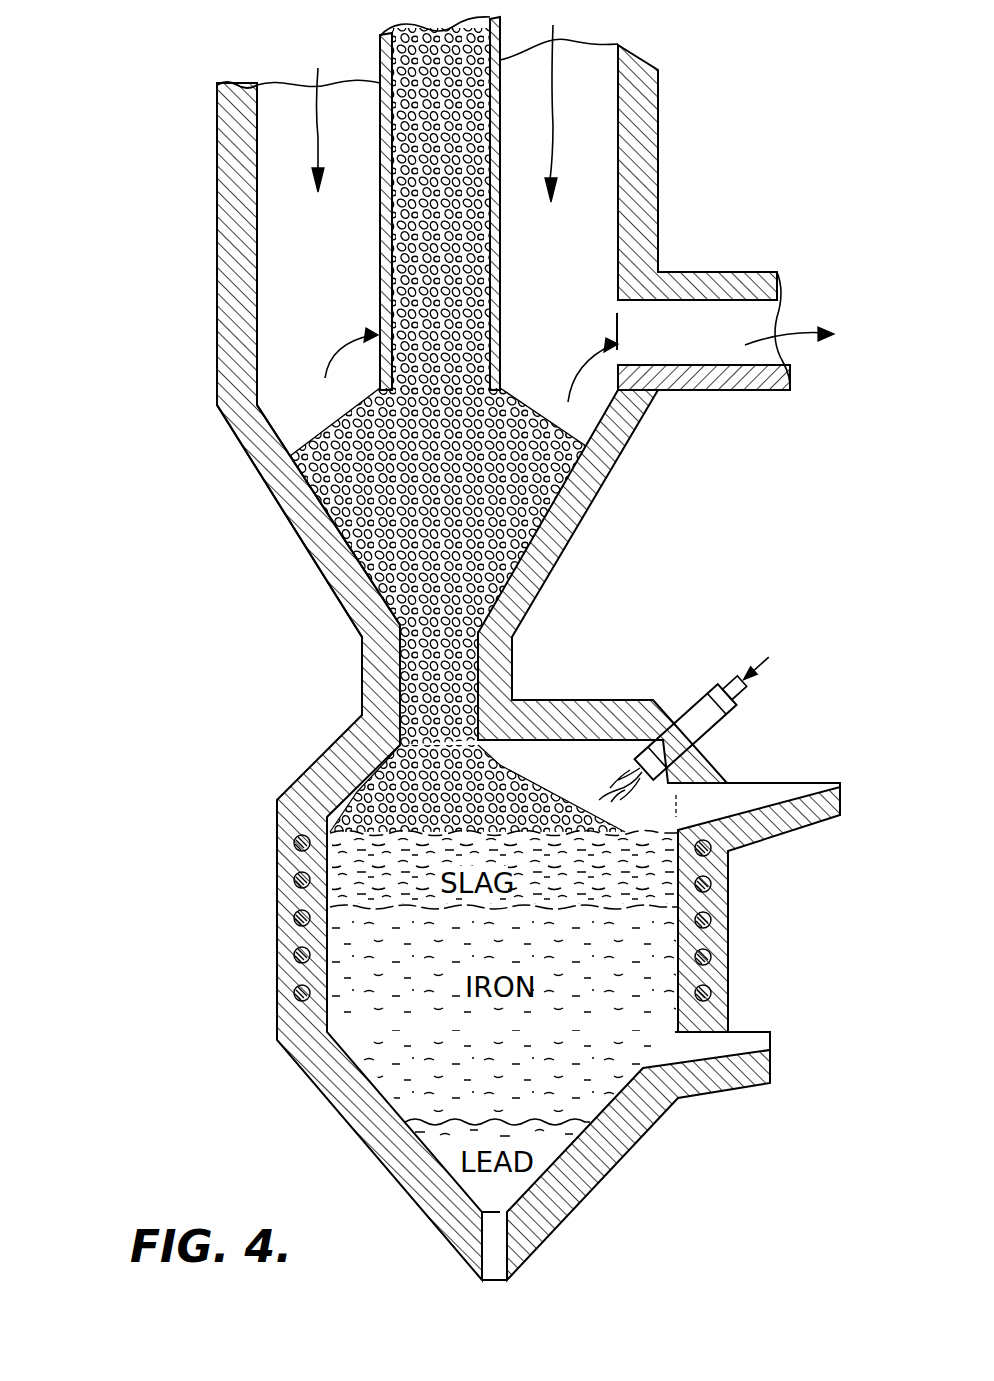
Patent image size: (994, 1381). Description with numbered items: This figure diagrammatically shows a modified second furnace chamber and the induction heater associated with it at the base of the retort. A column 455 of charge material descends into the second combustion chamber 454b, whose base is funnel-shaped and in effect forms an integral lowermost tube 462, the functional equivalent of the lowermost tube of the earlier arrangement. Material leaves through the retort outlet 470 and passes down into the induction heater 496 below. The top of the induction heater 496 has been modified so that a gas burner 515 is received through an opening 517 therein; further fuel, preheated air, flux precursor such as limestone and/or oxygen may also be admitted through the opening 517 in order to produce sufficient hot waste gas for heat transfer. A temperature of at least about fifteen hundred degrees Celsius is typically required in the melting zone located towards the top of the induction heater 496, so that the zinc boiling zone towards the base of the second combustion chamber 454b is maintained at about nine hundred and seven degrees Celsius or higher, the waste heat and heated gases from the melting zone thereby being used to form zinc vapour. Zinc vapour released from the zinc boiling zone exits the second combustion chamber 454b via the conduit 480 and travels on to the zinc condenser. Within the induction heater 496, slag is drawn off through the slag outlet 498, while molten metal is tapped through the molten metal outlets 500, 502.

The second combustion chamber 454b is at (235, 330).
The column 455 is at (383, 210).
The lowermost tube 462 is at (322, 543).
The retort outlet 470 is at (397, 690).
The conduit 480 is at (704, 325).
The induction heater 496 is at (283, 893).
The slag outlet 498 is at (772, 793).
The molten metal outlet 500 is at (740, 1048).
The molten metal outlet 502 is at (497, 1263).
The gas burner 515 is at (712, 705).
The opening 517 is at (675, 715).